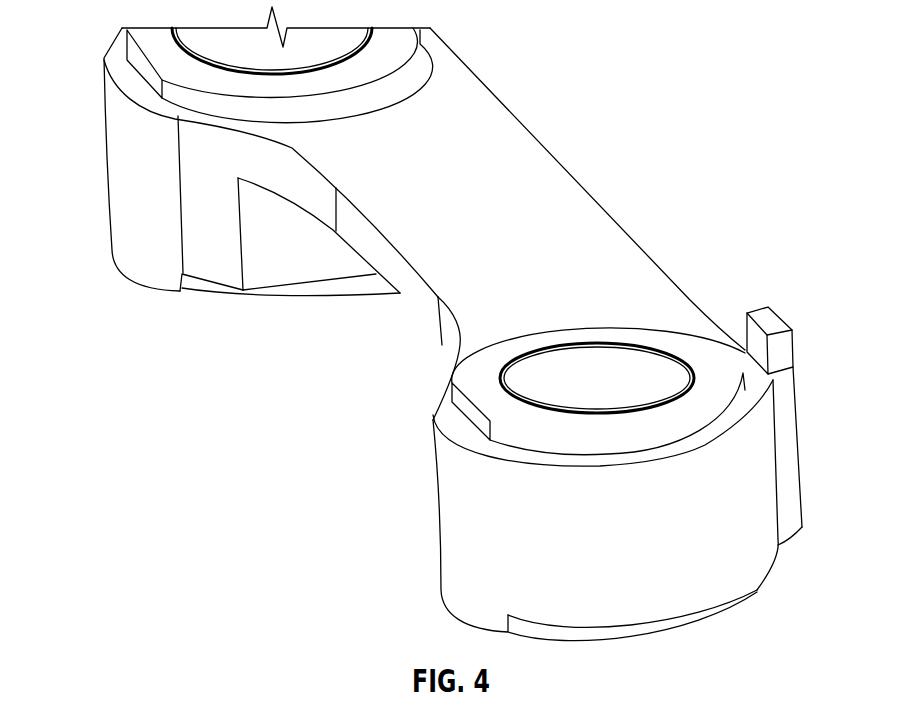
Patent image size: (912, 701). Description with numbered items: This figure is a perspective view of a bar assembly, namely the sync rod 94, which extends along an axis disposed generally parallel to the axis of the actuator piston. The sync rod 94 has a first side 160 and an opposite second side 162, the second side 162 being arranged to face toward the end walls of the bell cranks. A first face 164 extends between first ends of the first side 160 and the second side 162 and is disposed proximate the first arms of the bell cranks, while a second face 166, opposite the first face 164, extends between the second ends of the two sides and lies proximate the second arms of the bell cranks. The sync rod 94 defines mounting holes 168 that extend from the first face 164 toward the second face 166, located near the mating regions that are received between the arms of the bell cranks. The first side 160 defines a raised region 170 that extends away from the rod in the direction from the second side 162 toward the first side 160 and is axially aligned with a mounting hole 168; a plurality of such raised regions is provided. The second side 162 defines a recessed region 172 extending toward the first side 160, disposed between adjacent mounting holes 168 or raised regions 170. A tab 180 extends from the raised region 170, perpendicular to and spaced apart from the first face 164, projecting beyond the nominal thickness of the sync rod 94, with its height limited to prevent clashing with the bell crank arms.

The sync rod 94 is at (134, 284).
The first side 160 is at (577, 180).
The second side 162 is at (400, 293).
The first face 164 is at (487, 100).
The second face 166 is at (422, 327).
The mounting hole 168 is at (585, 352).
The raised region 170 is at (806, 534).
The recessed region 172 is at (422, 384).
The tab 180 is at (788, 348).